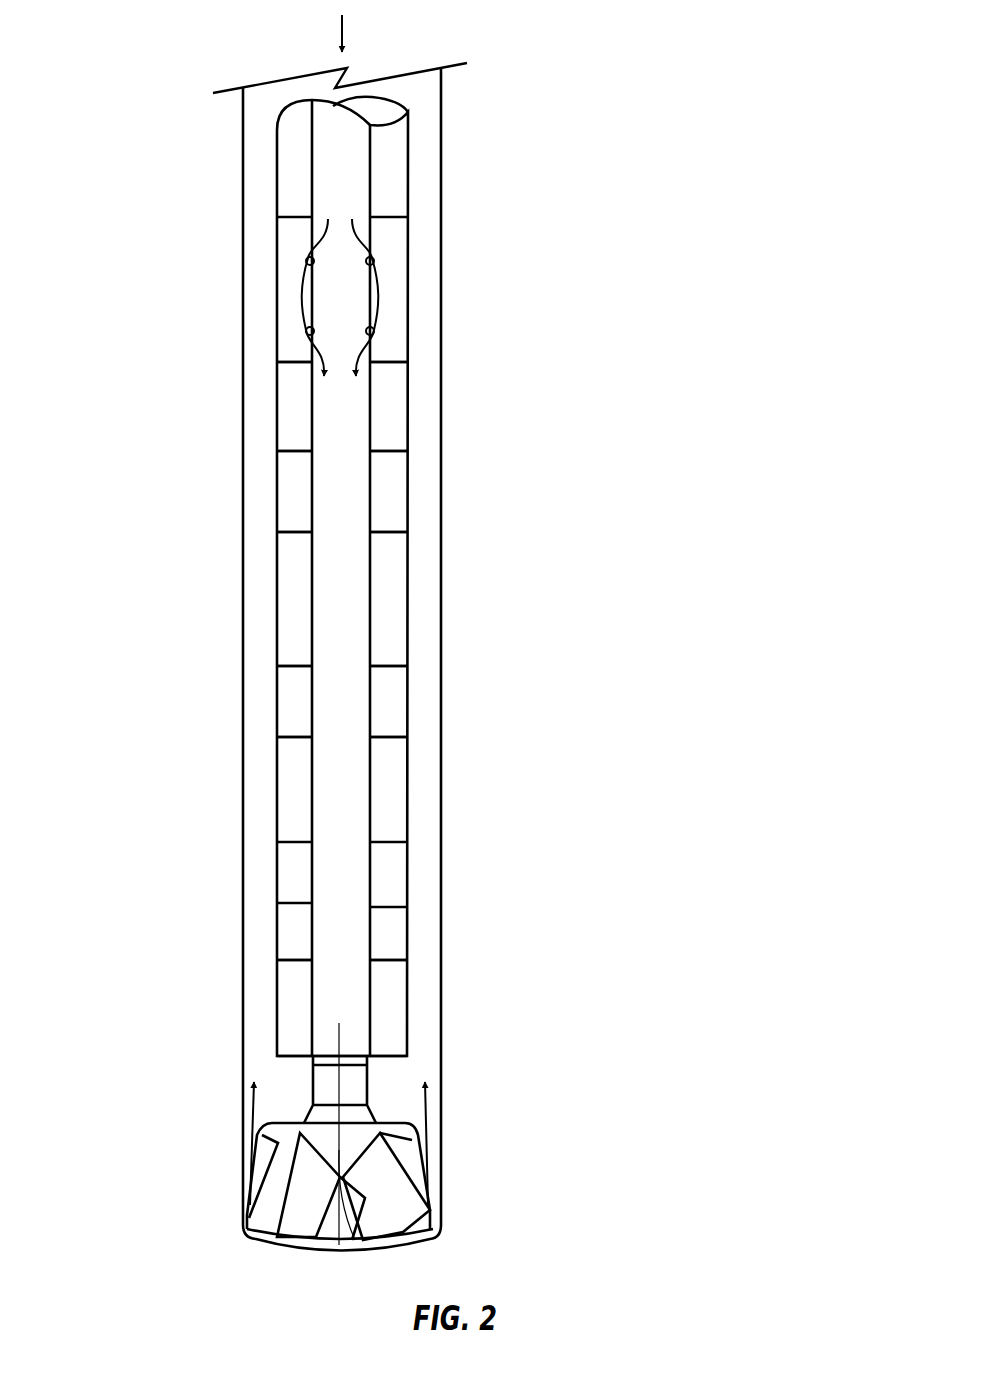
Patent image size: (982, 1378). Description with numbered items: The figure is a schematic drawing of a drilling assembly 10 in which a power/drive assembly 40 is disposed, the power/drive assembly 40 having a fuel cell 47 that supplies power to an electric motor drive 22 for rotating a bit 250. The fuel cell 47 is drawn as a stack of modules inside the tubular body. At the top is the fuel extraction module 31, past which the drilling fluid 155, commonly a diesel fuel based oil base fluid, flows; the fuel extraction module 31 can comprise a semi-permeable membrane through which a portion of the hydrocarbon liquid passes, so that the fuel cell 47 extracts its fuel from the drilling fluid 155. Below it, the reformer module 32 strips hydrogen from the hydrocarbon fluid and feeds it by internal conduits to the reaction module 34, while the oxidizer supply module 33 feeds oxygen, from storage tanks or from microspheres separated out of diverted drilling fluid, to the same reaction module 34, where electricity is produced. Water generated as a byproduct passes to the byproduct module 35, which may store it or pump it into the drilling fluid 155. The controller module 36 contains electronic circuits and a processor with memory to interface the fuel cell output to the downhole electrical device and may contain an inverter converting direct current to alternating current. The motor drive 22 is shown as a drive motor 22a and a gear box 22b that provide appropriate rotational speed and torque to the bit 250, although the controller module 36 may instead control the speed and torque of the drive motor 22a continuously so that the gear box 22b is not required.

The drilling assembly 10 is at (706, 416).
The power/drive assembly 40 is at (150, 606).
The fuel cell 47 is at (230, 217).
The fuel extraction module 31 is at (407, 253).
The reformer module 32 is at (407, 385).
The oxidizer supply module 33 is at (407, 477).
The reaction module 34 is at (407, 590).
The byproduct module 35 is at (407, 692).
The controller module 36 is at (407, 777).
The motor drive 22 is at (230, 902).
The drive motor 22a is at (407, 935).
The gear box 22b is at (407, 1012).
The bit 250 is at (430, 1196).
The drilling fluid 155 is at (342, 27).